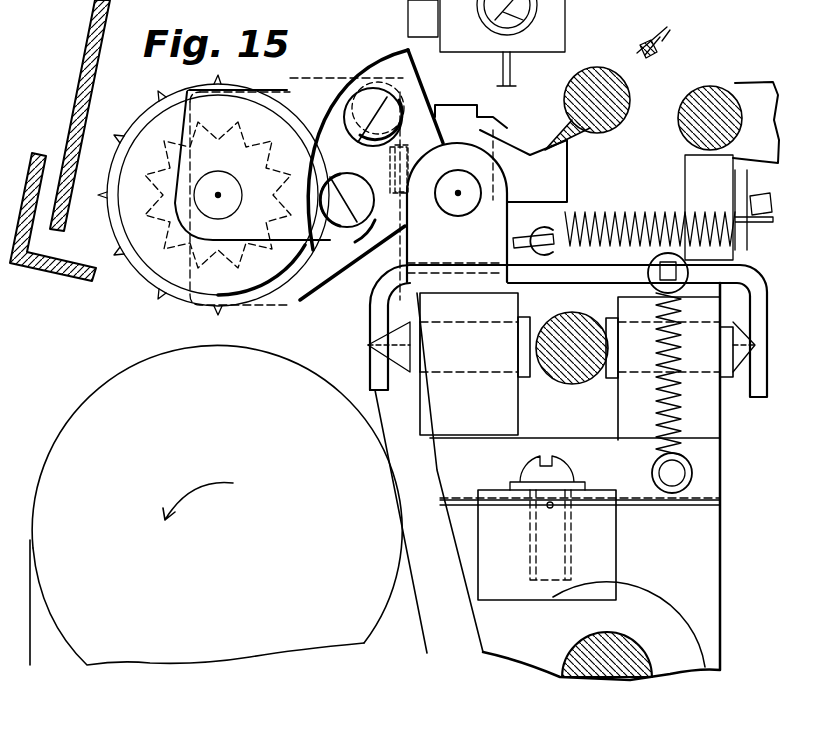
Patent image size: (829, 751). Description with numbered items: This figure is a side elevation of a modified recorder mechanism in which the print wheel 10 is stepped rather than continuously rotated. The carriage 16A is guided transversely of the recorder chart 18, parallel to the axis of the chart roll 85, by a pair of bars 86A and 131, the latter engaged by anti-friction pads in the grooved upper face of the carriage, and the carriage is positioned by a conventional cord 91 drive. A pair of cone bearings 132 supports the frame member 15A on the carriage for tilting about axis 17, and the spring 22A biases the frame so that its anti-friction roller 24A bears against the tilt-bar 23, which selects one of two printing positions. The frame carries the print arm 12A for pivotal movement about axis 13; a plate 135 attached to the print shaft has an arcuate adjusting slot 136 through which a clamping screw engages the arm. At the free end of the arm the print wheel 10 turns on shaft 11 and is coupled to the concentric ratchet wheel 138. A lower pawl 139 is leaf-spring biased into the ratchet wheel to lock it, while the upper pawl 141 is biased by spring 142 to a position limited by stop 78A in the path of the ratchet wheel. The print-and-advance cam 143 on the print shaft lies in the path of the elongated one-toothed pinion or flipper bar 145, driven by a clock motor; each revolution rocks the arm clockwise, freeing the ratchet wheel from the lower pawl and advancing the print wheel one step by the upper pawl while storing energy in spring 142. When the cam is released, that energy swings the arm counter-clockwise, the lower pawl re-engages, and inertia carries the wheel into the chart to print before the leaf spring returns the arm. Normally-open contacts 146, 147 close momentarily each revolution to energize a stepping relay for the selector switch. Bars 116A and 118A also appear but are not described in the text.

The print wheel 10 is at (140, 122).
The print wheel shaft 11 is at (219, 194).
The print arm 12A is at (233, 103).
The pivotal axis 13 is at (457, 192).
The frame member 15A is at (758, 298).
The carriage 16A is at (720, 595).
The tilt axis 17 is at (375, 345).
The recorder chart 18 is at (417, 620).
The spring 22A is at (658, 405).
The tilt-bar 23 is at (710, 100).
The anti-friction roller 24A is at (700, 188).
The stop 78A is at (391, 137).
The chart roll 85 is at (303, 587).
The guide bar 86A is at (620, 645).
The cord 91 is at (553, 507).
The stop bar 116A is at (40, 270).
The guide bar 118A is at (93, 12).
The guide bar 131 is at (558, 383).
The cone bearings 132 is at (402, 353).
The plate 135 is at (416, 68).
The arcuate adjusting slot 136 is at (365, 207).
The ratchet wheel 138 is at (165, 215).
The lower pawl 139 is at (297, 292).
The upper pawl 141 is at (340, 78).
The spring 142 is at (645, 210).
The print-and-advance cam 143 is at (550, 193).
The one-toothed pinion or flipper bar 145 is at (558, 118).
The normally-open contact 146 is at (657, 40).
The normally-open contact 147 is at (655, 50).